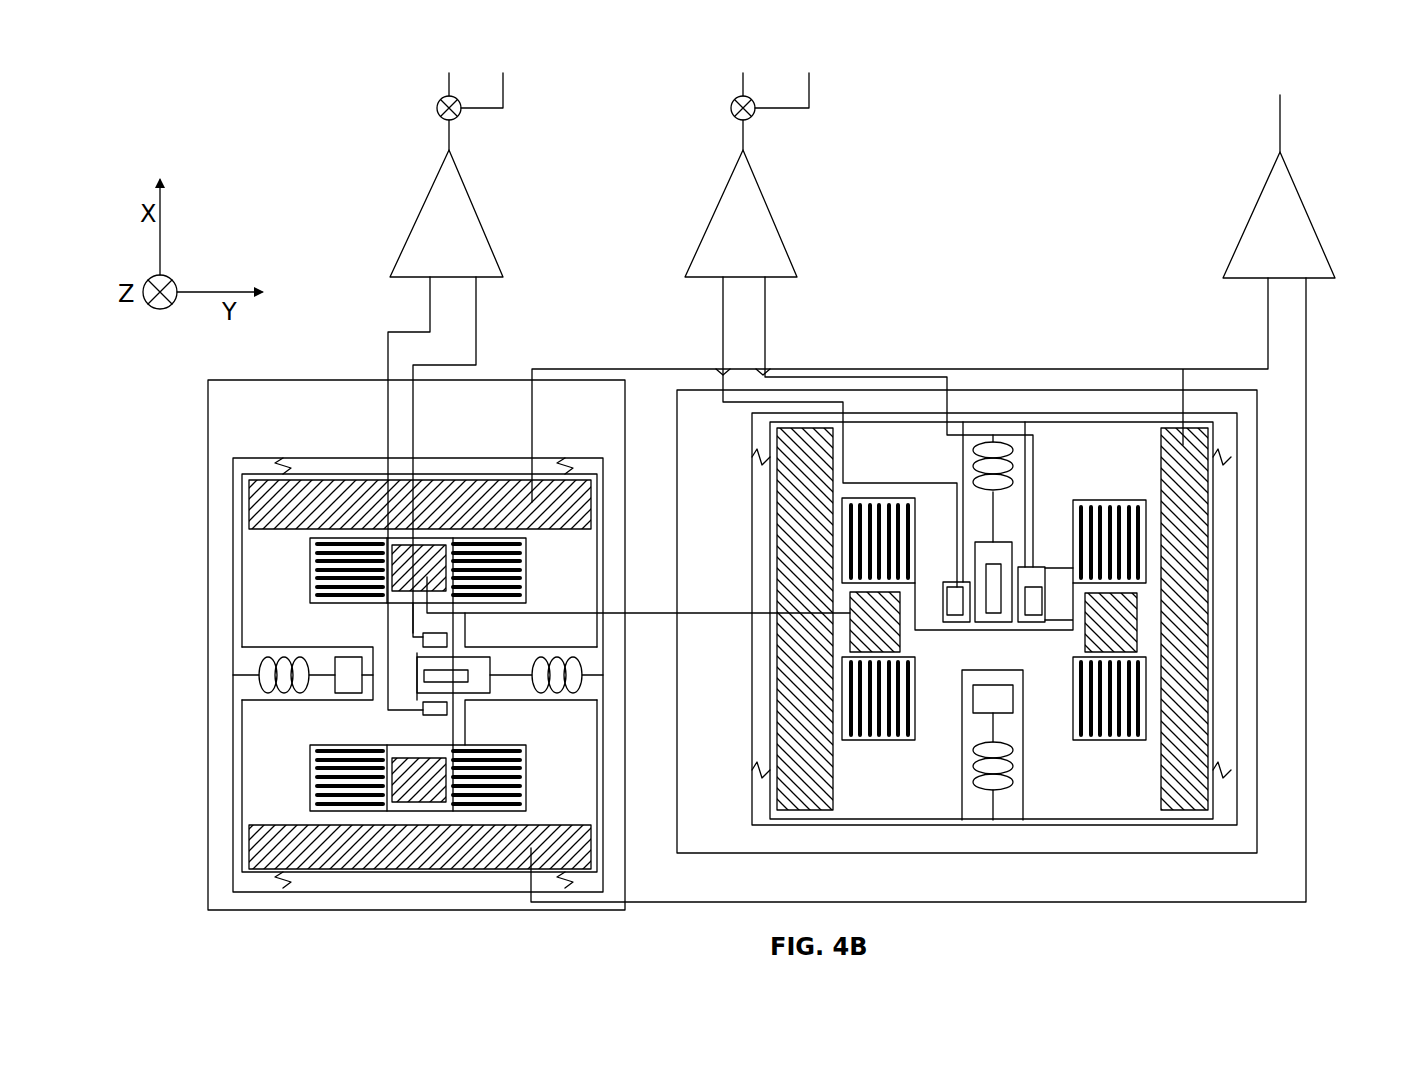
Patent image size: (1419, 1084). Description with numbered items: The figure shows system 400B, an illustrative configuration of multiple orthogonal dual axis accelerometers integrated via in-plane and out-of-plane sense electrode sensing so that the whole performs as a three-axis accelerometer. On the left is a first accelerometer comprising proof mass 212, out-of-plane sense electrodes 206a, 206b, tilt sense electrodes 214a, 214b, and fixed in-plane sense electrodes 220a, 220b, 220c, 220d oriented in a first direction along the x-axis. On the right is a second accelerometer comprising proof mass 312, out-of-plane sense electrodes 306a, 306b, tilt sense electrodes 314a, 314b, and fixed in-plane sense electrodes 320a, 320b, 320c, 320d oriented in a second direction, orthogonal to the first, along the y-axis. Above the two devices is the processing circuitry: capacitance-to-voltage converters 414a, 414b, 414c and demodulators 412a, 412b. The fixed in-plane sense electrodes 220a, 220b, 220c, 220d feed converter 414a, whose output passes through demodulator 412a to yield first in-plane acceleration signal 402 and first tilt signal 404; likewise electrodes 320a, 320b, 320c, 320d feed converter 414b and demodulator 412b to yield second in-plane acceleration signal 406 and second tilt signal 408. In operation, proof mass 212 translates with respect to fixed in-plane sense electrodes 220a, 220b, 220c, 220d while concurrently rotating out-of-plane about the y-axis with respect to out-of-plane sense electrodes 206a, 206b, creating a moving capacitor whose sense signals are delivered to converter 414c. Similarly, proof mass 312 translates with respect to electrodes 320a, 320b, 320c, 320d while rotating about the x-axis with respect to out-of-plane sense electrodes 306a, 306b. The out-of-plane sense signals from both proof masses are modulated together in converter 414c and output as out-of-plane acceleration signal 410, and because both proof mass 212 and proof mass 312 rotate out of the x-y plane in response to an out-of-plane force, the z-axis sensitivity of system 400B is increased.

The system 400B is at (243, 78).
The first in-plane acceleration signal 402 is at (446, 86).
The first tilt signal 404 is at (503, 92).
The second in-plane acceleration signal 406 is at (740, 86).
The second tilt signal 408 is at (809, 92).
The out-of-plane acceleration signal 410 is at (1278, 124).
The demodulator 412a is at (436, 108).
The demodulator 412b is at (730, 108).
The capacitance-to-voltage (C2V) converter 414a is at (470, 198).
The capacitance-to-voltage (C2V) converter 414b is at (785, 192).
The capacitance-to-voltage (C2V) converter 414c is at (1308, 215).
The fixed in-plane sense electrode 220a is at (500, 457).
The fixed in-plane sense electrode 220b is at (477, 322).
The fixed in-plane sense electrode 220c is at (374, 493).
The fixed in-plane sense electrode 220d is at (430, 290).
The fixed in-plane sense electrode 320a is at (786, 432).
The fixed in-plane sense electrode 320b is at (723, 300).
The fixed in-plane sense electrode 320c is at (899, 422).
The fixed in-plane sense electrode 320d is at (766, 332).
The out-of-plane sense electrode 206a is at (900, 390).
The out-of-plane sense electrode 206b is at (974, 589).
The out-of-plane sense electrode 306a is at (1268, 305).
The out-of-plane sense electrode 306b is at (1307, 326).
The proof mass 212 is at (468, 674).
The tilt sense electrode 214a is at (482, 721).
The tilt sense electrode 214b is at (416, 790).
The tilt sense electrode 314a is at (650, 613).
The proof mass 312 is at (993, 622).
The tilt sense electrode 314b is at (1126, 625).